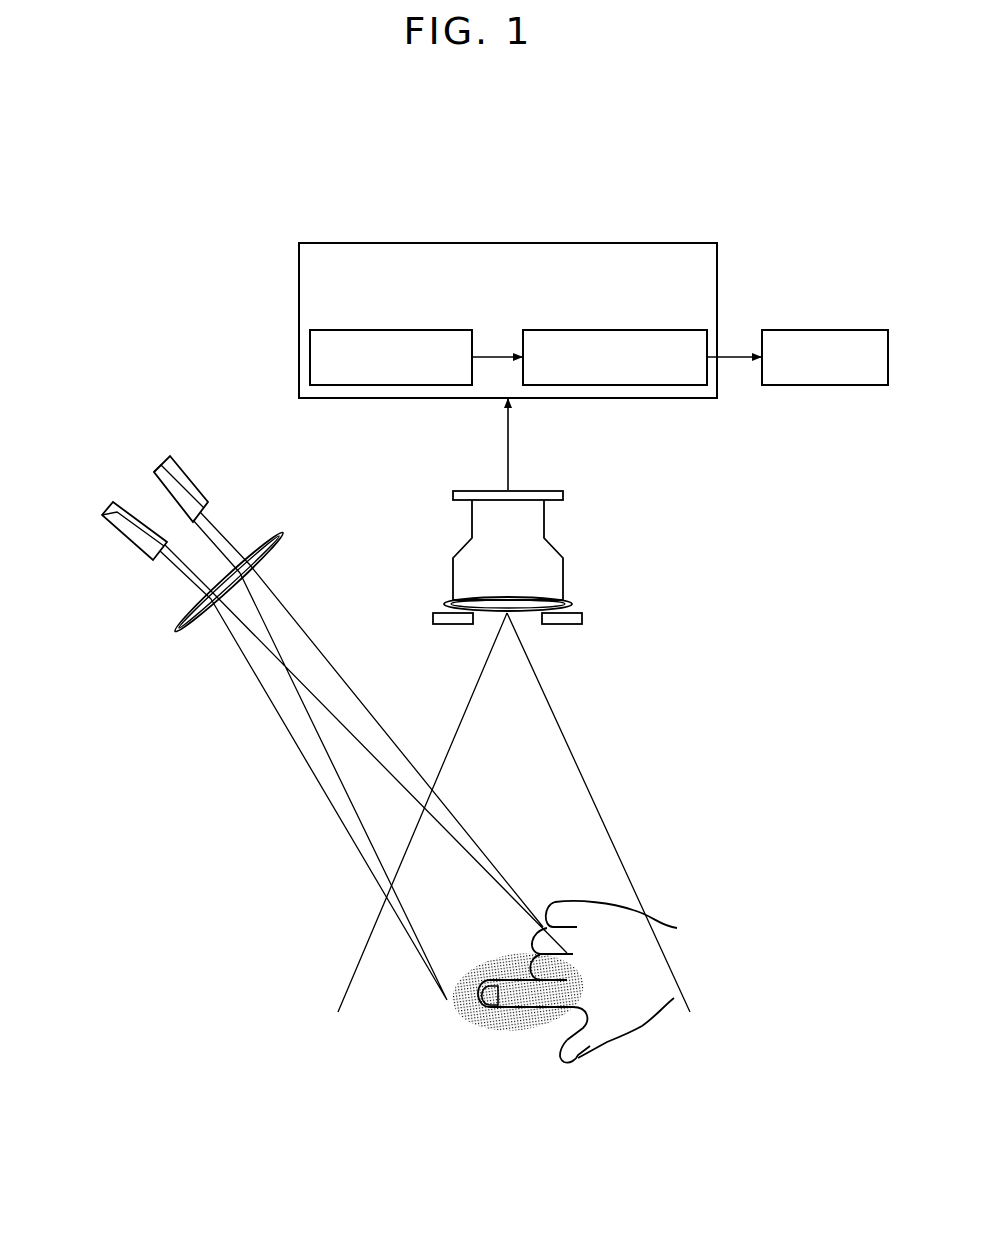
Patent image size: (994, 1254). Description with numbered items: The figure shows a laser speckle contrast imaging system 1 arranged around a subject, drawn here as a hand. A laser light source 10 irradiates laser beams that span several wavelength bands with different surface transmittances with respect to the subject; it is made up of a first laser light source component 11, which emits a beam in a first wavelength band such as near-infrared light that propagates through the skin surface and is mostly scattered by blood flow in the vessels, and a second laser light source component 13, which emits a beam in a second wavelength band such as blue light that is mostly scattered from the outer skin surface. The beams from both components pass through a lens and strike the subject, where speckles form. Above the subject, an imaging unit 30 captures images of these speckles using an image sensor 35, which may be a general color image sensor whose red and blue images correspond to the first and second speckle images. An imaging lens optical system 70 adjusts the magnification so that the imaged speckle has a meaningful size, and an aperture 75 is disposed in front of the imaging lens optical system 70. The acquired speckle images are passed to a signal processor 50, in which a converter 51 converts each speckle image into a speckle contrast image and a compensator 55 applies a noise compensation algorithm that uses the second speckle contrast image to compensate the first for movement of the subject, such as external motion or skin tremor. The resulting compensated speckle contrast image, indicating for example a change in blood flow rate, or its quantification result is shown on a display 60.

The laser speckle contrast imaging system 1 is at (212, 260).
The laser light source 10 is at (210, 458).
The first laser light source component 11 is at (162, 462).
The second laser light source component 13 is at (110, 500).
The imaging unit 30 is at (428, 490).
The image sensor 35 is at (563, 495).
The signal processor 50 is at (507, 243).
The converter 51 is at (392, 330).
The compensator 55 is at (617, 330).
The display 60 is at (830, 330).
The imaging lens optical system 70 is at (571, 603).
The aperture 75 is at (583, 618).